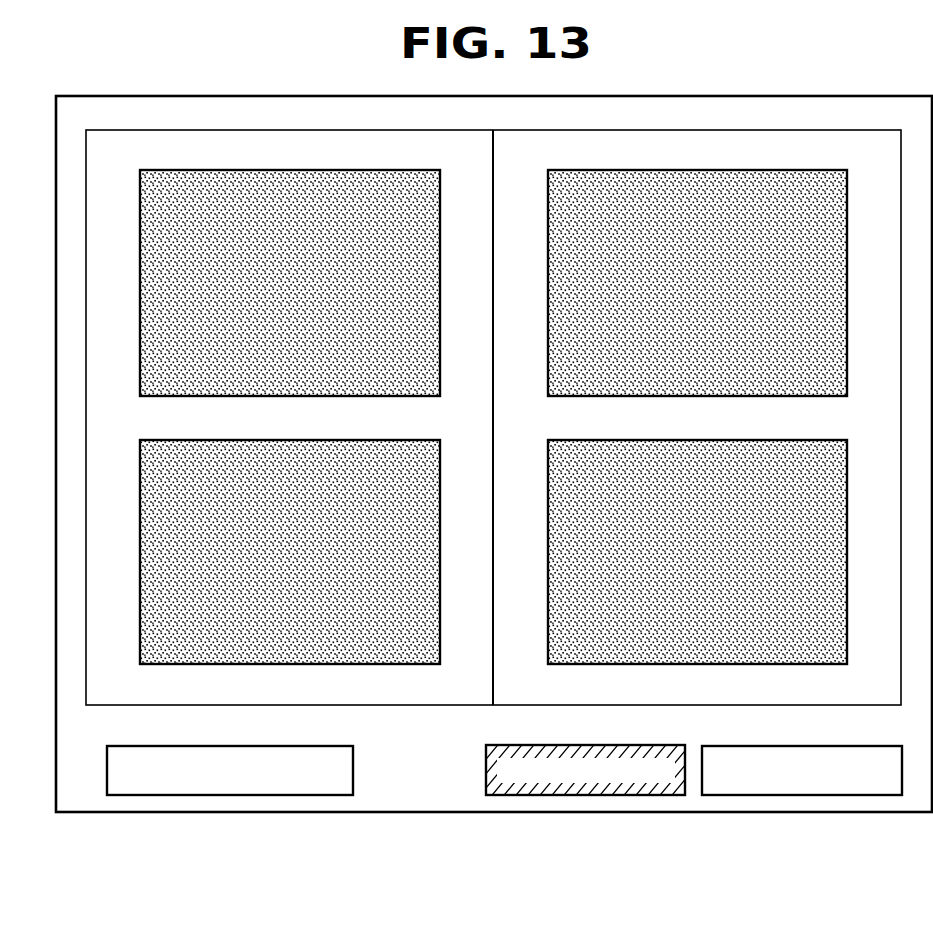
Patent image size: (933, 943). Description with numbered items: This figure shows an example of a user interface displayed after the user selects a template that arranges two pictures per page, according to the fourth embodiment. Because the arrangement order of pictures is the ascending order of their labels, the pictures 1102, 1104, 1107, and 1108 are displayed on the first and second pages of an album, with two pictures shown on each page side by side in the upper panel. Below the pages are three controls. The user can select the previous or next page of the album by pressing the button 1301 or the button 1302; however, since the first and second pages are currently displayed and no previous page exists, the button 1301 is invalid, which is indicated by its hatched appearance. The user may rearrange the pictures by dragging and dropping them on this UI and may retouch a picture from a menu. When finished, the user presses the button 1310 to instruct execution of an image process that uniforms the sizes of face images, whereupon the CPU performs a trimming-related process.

The picture 1102 is at (358, 170).
The picture 1104 is at (358, 440).
The picture 1107 is at (767, 170).
The picture 1108 is at (768, 440).
The button 1310 is at (231, 795).
The button 1301 is at (590, 795).
The button 1302 is at (806, 795).